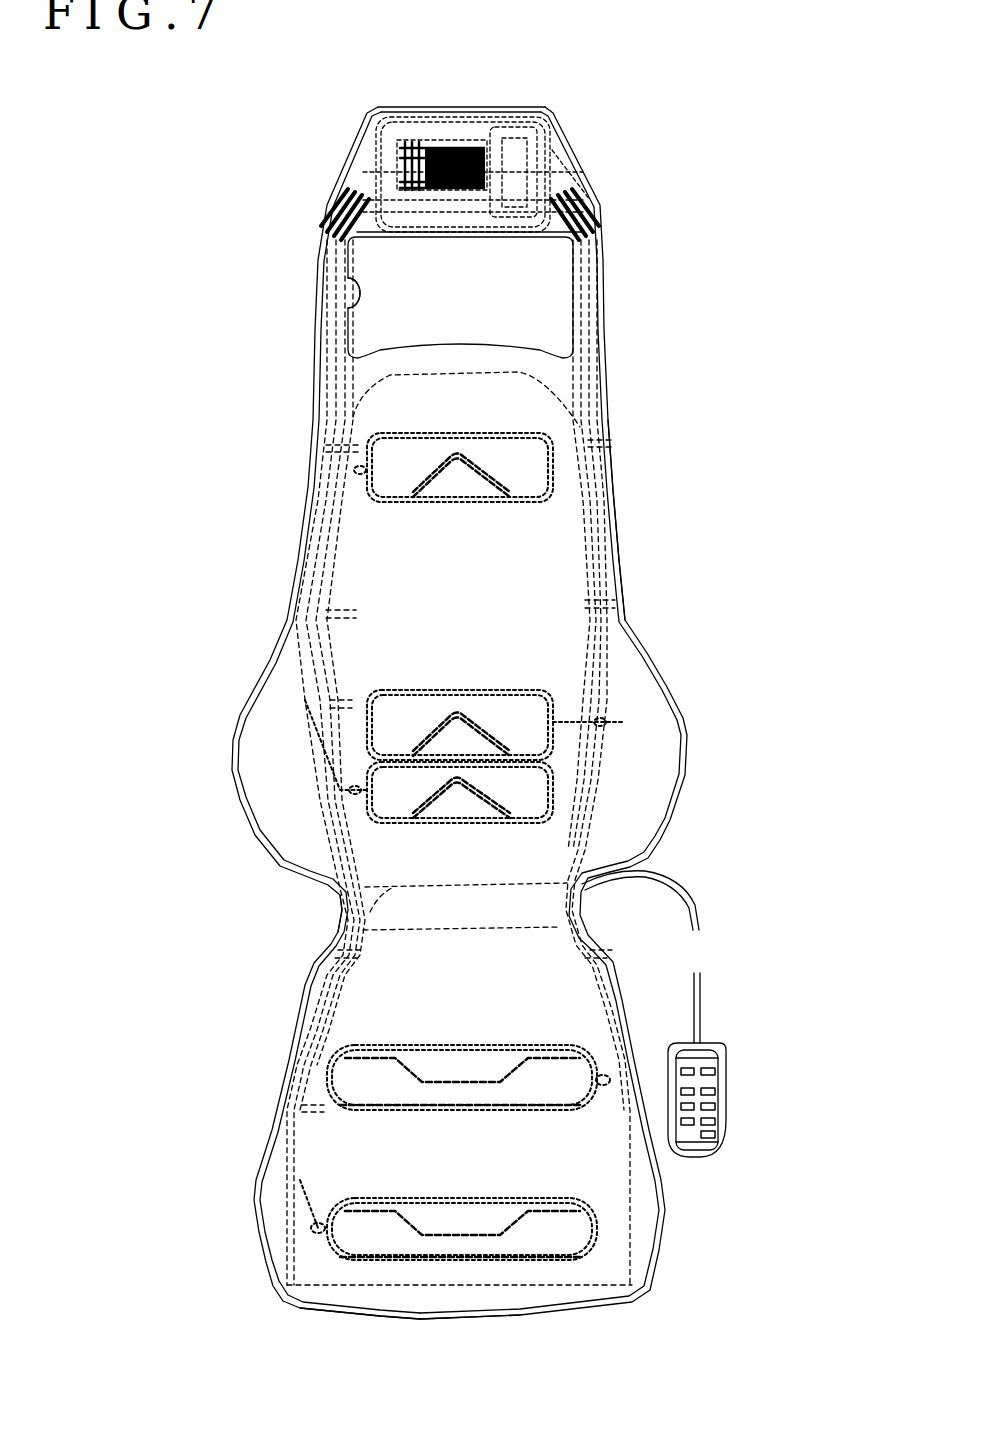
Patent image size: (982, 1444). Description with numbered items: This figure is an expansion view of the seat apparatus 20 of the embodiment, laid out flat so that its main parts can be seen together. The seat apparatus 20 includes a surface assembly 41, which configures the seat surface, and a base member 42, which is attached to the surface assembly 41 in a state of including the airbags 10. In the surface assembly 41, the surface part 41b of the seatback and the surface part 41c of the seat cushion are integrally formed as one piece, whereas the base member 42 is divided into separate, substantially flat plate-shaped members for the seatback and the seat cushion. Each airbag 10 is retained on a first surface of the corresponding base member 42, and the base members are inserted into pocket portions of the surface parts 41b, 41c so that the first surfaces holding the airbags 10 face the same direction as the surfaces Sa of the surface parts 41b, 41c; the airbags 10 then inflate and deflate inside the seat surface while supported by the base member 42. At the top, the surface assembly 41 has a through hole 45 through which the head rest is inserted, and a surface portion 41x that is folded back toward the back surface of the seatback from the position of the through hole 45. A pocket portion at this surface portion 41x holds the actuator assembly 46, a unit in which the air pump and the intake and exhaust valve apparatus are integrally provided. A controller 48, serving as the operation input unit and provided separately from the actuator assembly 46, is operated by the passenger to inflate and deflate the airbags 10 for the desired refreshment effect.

The seat apparatus 20 is at (118, 143).
The surface assembly 41 is at (366, 126).
The actuator assembly 46 is at (462, 120).
The surface portion 41x is at (572, 170).
The through hole 45 is at (345, 283).
The airbag 10 is at (600, 430).
The surface part of the seatback 41b is at (625, 511).
The surface of the surface portion Sa is at (355, 548).
The base member 42 is at (340, 910).
The controller 48 is at (728, 1100).
The surface part of the seat cushion 41c is at (508, 1312).